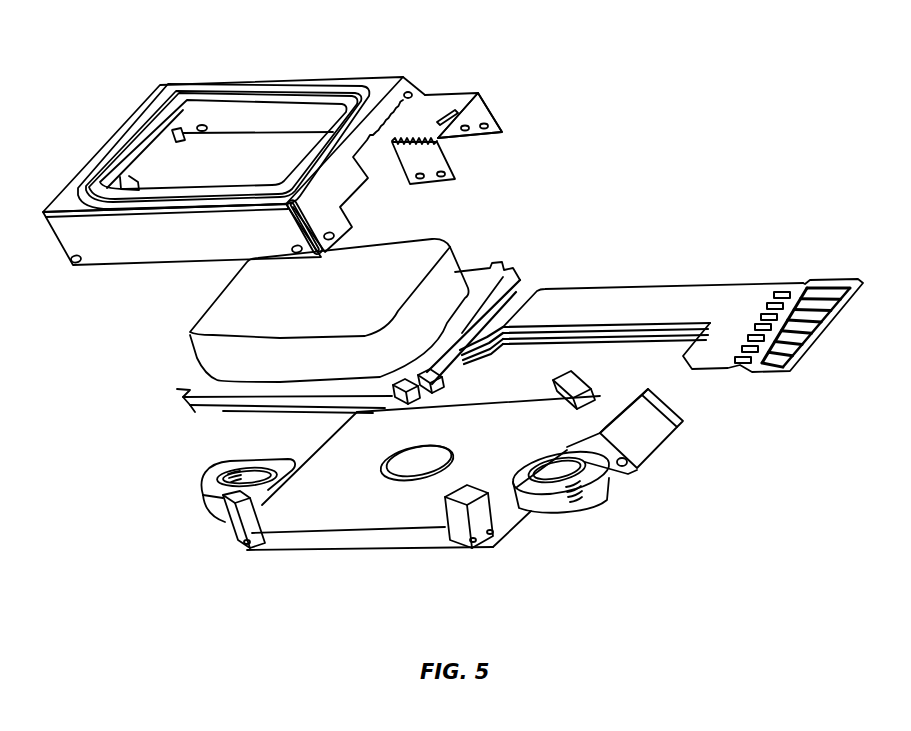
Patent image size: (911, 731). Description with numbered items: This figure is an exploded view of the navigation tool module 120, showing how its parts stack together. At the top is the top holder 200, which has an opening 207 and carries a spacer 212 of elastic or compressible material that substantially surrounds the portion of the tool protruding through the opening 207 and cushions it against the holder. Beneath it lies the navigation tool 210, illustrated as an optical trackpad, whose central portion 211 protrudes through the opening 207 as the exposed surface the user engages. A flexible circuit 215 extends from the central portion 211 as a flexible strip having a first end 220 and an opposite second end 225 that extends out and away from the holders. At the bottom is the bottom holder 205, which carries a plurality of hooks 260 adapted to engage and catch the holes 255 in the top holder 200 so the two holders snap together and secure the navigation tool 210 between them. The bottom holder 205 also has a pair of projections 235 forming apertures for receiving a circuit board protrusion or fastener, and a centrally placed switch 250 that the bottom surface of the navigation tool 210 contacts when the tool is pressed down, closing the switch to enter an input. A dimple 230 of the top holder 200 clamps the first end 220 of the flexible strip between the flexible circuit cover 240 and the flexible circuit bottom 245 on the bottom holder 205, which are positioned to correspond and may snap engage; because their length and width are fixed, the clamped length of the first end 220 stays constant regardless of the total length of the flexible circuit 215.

The navigation tool module 120 is at (152, 40).
The top holder 200 is at (168, 253).
The bottom holder 205 is at (505, 520).
The opening 207 is at (227, 162).
The navigation tool 210 is at (190, 352).
The central portion 211 is at (456, 278).
The spacer 212 is at (362, 92).
The flexible circuit 215 is at (634, 278).
The first end 220 is at (557, 303).
The second end 225 is at (758, 295).
The dimple 230 is at (487, 109).
The projections 235 is at (213, 486).
The flexible circuit cover 240 is at (428, 110).
The flexible circuit bottom 245 is at (648, 432).
The switch 250 is at (413, 462).
The holes 255 is at (75, 267).
The hooks 260 is at (243, 547).